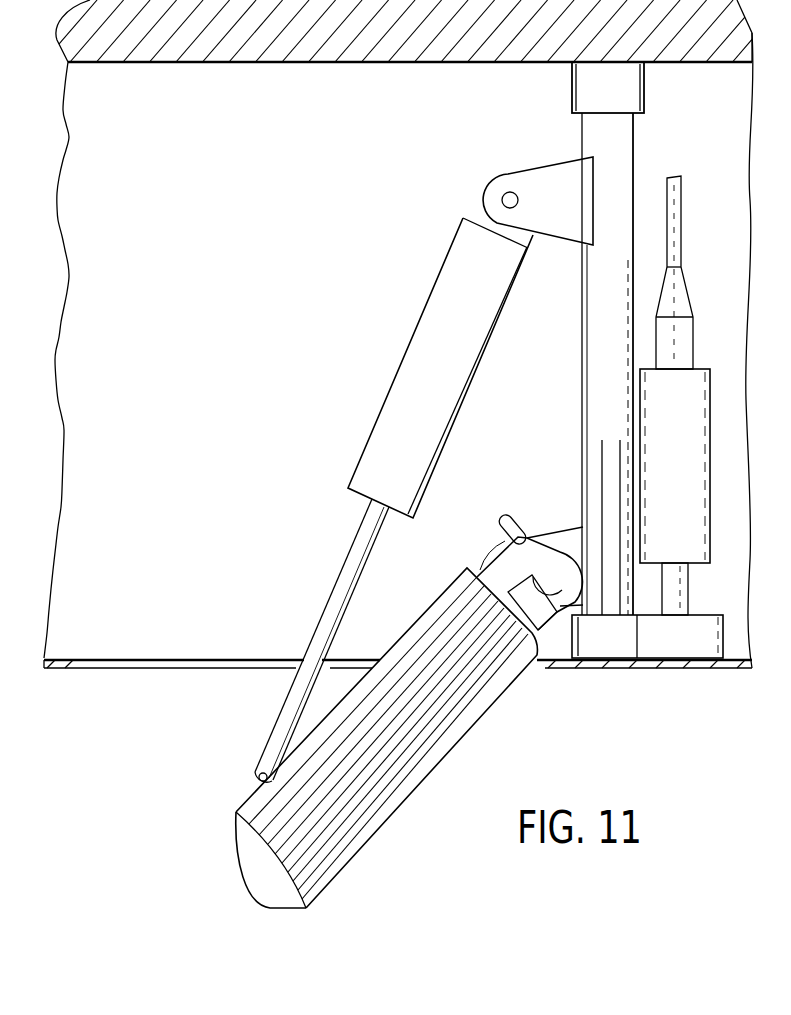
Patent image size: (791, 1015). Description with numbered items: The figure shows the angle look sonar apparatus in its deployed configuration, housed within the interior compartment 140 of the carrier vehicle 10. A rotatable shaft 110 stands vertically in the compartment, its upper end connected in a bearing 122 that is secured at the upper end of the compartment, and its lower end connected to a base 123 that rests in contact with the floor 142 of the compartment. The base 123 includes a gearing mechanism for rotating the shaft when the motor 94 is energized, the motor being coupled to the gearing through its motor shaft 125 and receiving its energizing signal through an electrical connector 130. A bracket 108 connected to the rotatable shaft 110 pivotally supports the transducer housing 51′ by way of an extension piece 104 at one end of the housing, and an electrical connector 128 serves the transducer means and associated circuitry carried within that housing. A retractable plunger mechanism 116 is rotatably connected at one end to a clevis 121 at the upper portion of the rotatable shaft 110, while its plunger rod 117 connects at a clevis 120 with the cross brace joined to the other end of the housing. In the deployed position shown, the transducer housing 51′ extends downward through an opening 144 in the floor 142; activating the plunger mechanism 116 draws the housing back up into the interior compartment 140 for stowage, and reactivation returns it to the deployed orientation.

The carrier vehicle 10 is at (632, 662).
The housing 51′ is at (438, 768).
The motor 94 is at (711, 541).
The extension piece 104 is at (487, 563).
The bracket 108 is at (568, 534).
The rotatable shaft 110 is at (637, 156).
The retractable plunger mechanism 116 is at (416, 328).
The plunger rod 117 is at (331, 588).
The clevis 120 is at (249, 785).
The clevis 121 is at (552, 176).
The bearing 122 is at (645, 93).
The base 123 is at (661, 646).
The motor shaft 125 is at (676, 584).
The electrical connector 128 is at (530, 522).
The electrical connector 130 is at (693, 346).
The interior compartment 140 is at (286, 267).
The floor 142 is at (741, 666).
The opening 144 is at (191, 660).